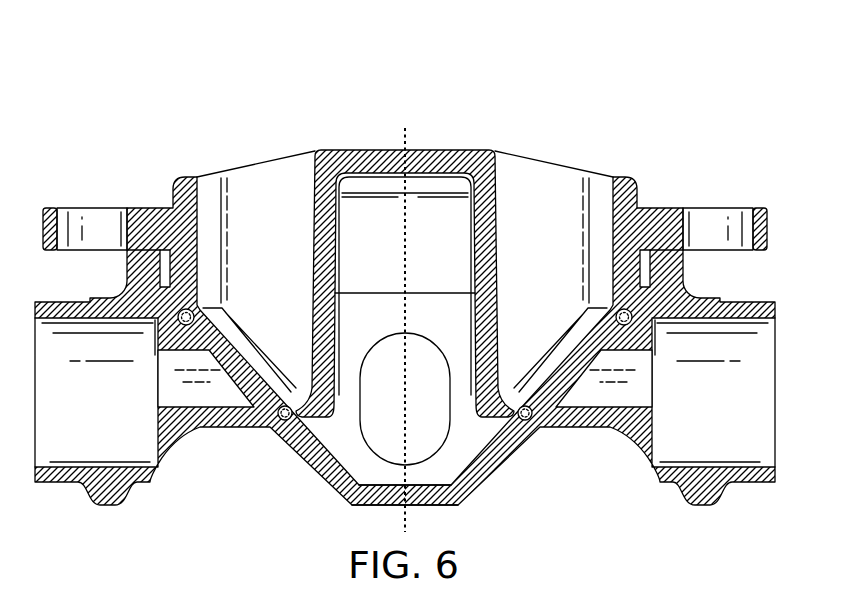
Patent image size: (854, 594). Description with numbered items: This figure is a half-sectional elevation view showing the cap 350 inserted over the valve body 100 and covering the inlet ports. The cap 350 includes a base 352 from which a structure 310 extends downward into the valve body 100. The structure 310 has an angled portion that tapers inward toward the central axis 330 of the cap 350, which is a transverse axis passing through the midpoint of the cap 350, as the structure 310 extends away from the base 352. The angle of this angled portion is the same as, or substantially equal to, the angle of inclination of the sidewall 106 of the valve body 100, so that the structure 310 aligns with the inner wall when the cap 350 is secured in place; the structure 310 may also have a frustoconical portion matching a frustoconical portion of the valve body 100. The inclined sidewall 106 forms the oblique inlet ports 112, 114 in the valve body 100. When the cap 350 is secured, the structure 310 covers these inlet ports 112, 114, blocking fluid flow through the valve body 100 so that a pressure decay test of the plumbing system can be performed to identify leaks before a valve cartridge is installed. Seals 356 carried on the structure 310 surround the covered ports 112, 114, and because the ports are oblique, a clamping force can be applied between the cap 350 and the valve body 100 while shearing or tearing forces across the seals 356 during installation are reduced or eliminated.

The valve body 100 is at (638, 441).
The sidewall 106 is at (332, 476).
The inlet port 112 is at (250, 378).
The inlet port 114 is at (568, 388).
The structure 310 is at (320, 273).
The central axis 330 is at (407, 141).
The cap 350 is at (772, 101).
The base 352 is at (145, 222).
The seals 356 is at (181, 311).